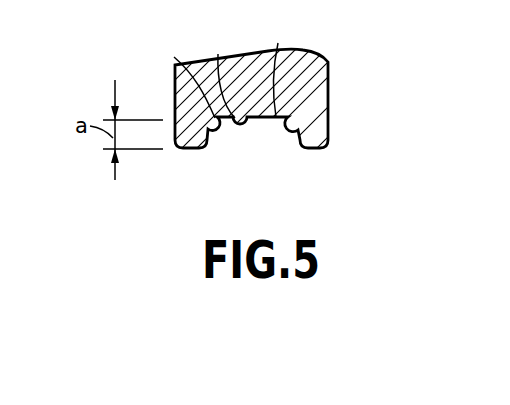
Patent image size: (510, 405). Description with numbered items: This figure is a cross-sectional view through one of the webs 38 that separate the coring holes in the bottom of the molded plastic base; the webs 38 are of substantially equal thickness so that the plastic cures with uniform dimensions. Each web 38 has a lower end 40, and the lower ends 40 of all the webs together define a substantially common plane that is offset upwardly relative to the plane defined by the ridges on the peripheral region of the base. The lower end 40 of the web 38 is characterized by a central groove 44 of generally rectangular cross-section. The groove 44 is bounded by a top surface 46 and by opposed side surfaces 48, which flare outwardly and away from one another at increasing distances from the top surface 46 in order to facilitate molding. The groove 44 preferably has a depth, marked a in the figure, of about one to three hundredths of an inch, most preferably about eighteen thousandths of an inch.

The web 38 is at (332, 150).
The lower end 40 is at (312, 152).
The central groove 44 is at (245, 130).
The top surface 46 is at (219, 73).
The side surfaces 48 is at (219, 68).